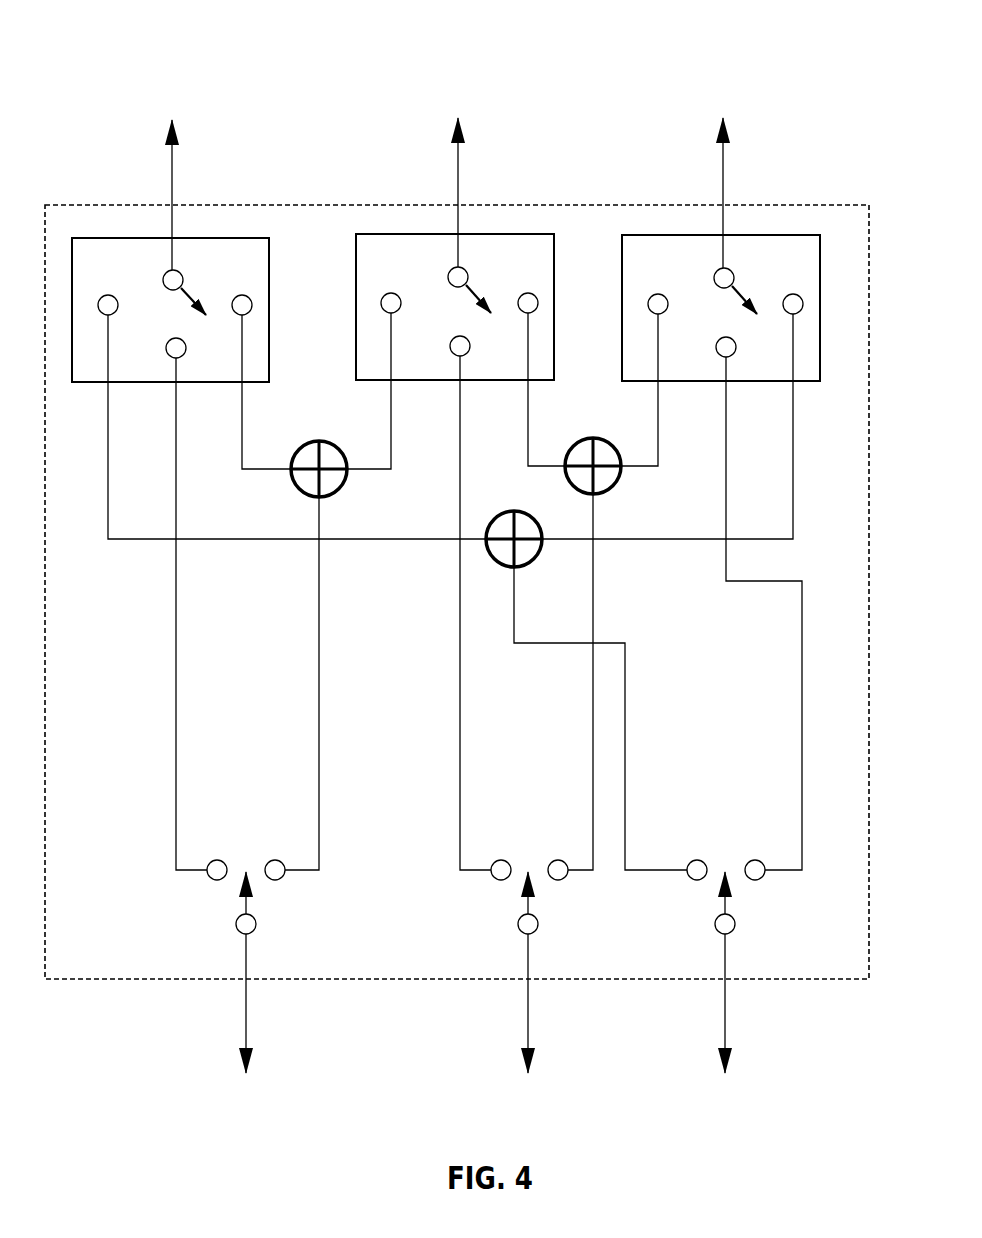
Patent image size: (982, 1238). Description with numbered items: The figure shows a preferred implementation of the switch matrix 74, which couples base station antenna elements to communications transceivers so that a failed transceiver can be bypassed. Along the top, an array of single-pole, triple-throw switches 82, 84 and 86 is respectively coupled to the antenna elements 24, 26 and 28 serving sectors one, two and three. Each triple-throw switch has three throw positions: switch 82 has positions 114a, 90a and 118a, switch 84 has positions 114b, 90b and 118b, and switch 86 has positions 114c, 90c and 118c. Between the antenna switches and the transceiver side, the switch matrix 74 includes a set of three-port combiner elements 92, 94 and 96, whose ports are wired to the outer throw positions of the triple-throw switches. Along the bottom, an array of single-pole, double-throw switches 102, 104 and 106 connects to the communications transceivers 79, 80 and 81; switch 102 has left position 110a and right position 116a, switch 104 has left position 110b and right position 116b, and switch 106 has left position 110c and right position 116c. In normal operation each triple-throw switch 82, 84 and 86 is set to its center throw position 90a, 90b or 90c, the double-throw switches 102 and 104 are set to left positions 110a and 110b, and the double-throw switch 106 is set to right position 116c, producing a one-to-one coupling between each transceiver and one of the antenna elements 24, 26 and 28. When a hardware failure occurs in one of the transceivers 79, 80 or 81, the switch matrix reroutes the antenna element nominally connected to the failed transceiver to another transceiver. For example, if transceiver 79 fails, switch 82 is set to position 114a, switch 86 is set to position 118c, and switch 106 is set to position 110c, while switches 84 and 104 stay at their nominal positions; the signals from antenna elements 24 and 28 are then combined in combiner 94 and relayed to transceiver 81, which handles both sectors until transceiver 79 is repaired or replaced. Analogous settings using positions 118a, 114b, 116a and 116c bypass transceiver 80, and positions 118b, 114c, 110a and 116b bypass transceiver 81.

The switch matrix 74 is at (120, 983).
The antenna element 24 is at (165, 157).
The antenna element 26 is at (459, 156).
The antenna element 28 is at (714, 157).
The communications transceiver 79 is at (253, 1032).
The communications transceiver 80 is at (527, 1029).
The communications transceiver 81 is at (735, 1030).
The single-pole, triple-throw switch 82 is at (269, 325).
The single-pole, triple-throw switch 84 is at (554, 343).
The single-pole, triple-throw switch 86 is at (820, 360).
The center throw position 90a is at (178, 338).
The center throw position 90b is at (462, 336).
The center throw position 90c is at (728, 337).
The three-port combiner element 92 is at (321, 441).
The three-port combiner element 94 is at (515, 510).
The three-port combiner element 96 is at (593, 437).
The single-pole, double-throw switch 102 is at (222, 888).
The single-pole, double-throw switch 104 is at (500, 888).
The single-pole, double-throw switch 106 is at (692, 888).
The left position 110a is at (224, 848).
The left position 110b is at (507, 848).
The left position 110c is at (703, 848).
The switch position 114a is at (115, 283).
The switch position 114b is at (398, 281).
The switch position 114c is at (665, 282).
The right position 116a is at (276, 860).
The right position 116b is at (559, 860).
The right position 116c is at (755, 860).
The switch position 118a is at (250, 287).
The switch position 118b is at (530, 293).
The switch position 118c is at (795, 294).